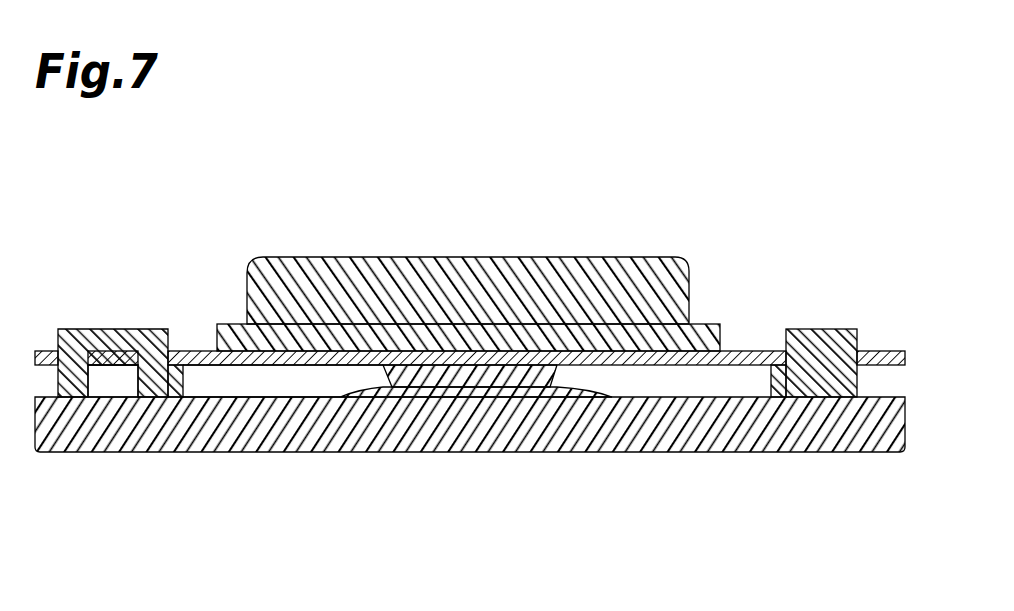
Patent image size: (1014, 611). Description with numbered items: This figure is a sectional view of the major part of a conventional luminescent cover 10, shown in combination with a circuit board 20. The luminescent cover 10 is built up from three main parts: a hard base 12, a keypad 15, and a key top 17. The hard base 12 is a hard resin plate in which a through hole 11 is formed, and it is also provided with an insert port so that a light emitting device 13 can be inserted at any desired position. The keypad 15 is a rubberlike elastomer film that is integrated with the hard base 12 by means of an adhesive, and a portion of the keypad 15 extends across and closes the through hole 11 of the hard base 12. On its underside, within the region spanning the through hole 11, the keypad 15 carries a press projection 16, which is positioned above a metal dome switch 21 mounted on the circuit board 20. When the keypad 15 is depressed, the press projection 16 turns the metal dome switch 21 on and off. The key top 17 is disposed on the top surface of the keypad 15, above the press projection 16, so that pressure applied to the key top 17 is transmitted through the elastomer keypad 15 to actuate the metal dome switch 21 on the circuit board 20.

The luminescent cover 10 is at (690, 212).
The through hole 11 is at (183, 367).
The hard base 12 is at (155, 337).
The light emitting device 13 is at (117, 383).
The keypad 15 is at (705, 360).
The press projection 16 is at (515, 365).
The key top 17 is at (600, 270).
The circuit board 20 is at (866, 430).
The metal dome switch 21 is at (384, 387).